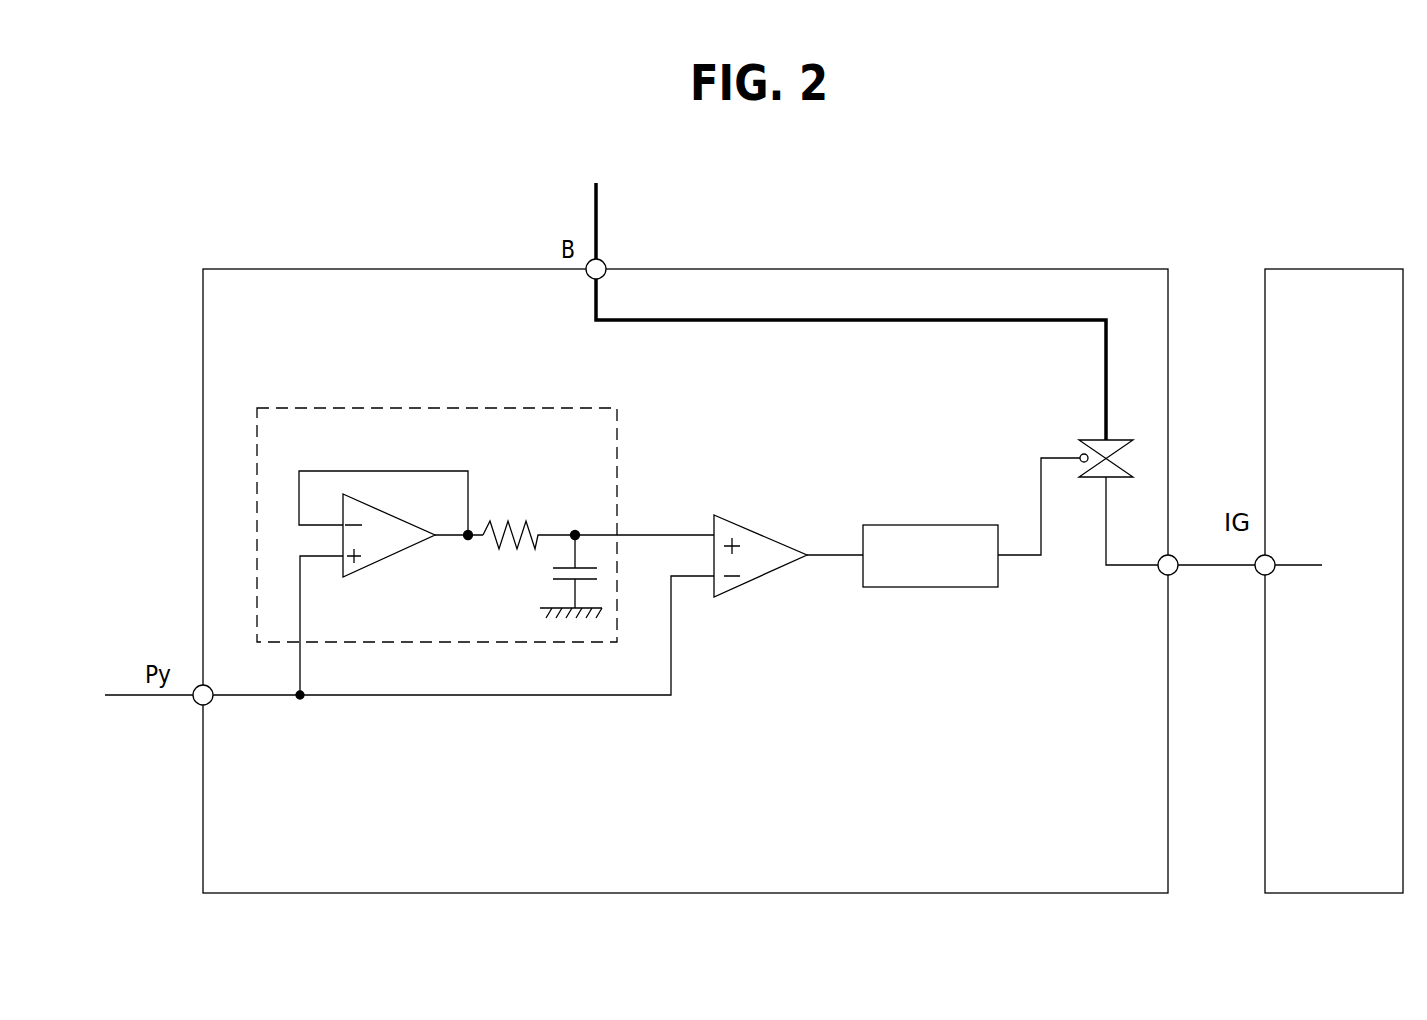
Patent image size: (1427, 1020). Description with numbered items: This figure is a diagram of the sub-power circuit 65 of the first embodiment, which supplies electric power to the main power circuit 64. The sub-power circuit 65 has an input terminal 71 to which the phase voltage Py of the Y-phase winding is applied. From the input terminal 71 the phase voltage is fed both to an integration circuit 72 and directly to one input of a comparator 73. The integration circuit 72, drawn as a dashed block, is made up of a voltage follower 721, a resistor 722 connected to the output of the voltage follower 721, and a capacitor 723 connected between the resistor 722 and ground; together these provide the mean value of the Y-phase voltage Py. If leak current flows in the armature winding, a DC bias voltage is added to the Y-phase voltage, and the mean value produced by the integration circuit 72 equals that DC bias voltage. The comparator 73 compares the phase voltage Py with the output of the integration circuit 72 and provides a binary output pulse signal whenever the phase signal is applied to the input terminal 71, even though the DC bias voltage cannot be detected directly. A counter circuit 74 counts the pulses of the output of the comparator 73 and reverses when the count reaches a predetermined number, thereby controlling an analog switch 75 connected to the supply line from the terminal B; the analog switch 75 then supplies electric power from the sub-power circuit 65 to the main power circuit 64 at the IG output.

The main power circuit 64 is at (1325, 269).
The sub-power circuit 65 is at (892, 269).
The input terminal 71 is at (196, 702).
The integration circuit 72 is at (310, 407).
The voltage follower 721 is at (386, 558).
The resistor 722 is at (510, 518).
The capacitor 723 is at (555, 568).
The comparator 73 is at (762, 531).
The counter circuit 74 is at (940, 524).
The analog switch 75 is at (1090, 440).